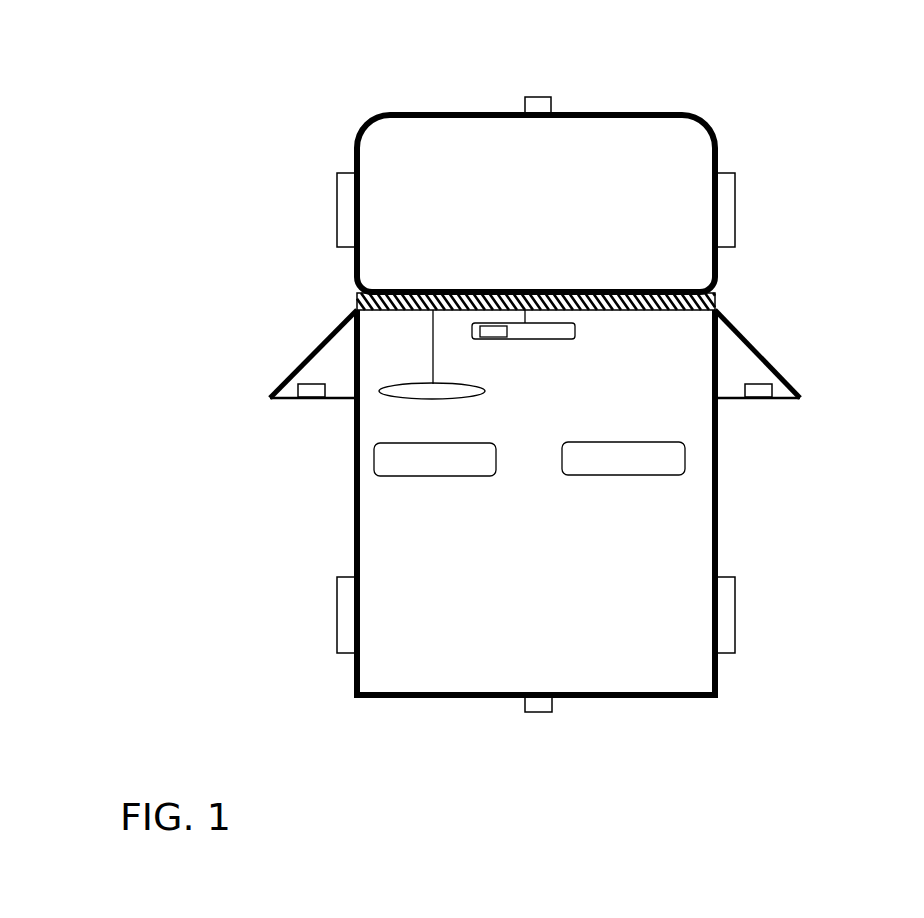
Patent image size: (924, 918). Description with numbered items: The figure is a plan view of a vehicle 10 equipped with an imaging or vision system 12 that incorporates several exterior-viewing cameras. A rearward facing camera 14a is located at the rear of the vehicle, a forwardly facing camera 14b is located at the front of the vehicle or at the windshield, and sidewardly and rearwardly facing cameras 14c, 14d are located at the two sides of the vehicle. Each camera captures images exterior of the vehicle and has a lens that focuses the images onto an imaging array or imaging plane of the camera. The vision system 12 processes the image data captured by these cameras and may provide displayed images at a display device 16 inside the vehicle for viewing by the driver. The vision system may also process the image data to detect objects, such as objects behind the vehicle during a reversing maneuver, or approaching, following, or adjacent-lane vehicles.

The vehicle 10 is at (272, 122).
The vision system 12 is at (483, 730).
The rearward facing camera 14a is at (540, 710).
The forwardly facing camera 14b is at (537, 100).
The sidewardly/rearwardly facing camera 14c is at (310, 388).
The sidewardly/rearwardly facing camera 14d is at (762, 392).
The display device 16 is at (495, 330).